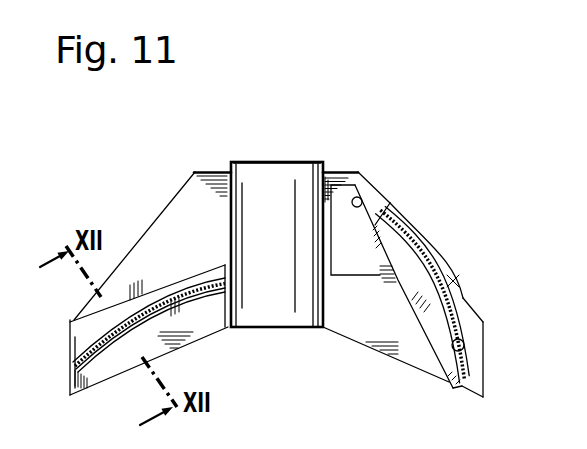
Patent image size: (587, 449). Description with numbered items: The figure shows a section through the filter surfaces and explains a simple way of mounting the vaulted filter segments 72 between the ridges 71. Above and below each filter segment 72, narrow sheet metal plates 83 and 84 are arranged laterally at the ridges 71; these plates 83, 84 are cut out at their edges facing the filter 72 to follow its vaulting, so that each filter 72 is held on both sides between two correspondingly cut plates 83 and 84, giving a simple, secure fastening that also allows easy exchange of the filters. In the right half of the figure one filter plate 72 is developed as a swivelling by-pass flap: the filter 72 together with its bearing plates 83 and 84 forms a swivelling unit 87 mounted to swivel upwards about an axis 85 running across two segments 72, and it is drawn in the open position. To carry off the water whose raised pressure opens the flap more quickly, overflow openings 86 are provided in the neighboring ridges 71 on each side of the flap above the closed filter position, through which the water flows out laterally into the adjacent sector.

The ridge 71 is at (190, 197).
The filter segment 72 is at (99, 333).
The sheet metal plate 83 is at (157, 283).
The sheet metal plate 84 is at (113, 344).
The axis 85 is at (464, 344).
The overflow opening 86 is at (361, 199).
The swivelling unit 87 is at (470, 285).